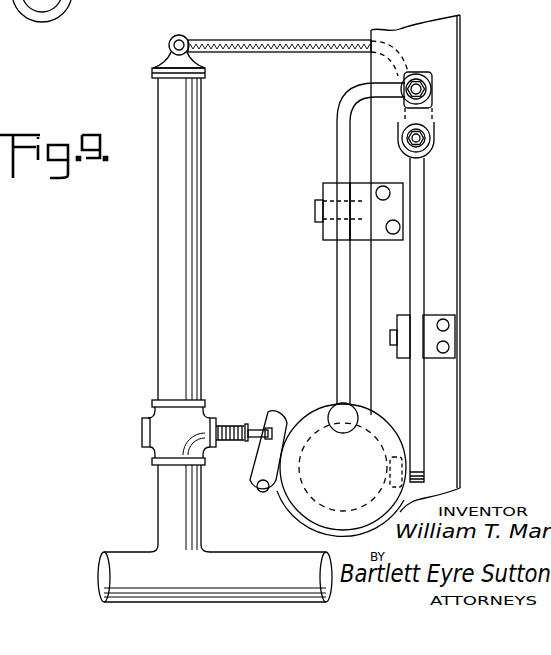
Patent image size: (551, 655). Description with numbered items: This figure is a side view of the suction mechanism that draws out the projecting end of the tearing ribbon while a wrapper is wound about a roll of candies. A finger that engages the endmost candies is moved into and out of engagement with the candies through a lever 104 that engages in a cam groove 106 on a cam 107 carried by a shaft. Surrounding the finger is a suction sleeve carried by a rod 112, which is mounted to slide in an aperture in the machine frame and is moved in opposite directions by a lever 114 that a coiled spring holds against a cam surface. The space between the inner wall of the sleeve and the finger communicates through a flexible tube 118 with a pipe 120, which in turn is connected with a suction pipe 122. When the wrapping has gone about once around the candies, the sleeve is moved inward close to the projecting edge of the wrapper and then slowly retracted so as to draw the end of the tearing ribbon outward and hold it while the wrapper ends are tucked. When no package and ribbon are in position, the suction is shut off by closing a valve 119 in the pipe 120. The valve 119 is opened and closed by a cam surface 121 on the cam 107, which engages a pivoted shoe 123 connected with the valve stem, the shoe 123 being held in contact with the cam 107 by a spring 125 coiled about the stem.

The lever 104 is at (419, 236).
The cam groove 106 is at (372, 433).
The cam 107 is at (376, 452).
The rod 112 is at (427, 90).
The lever 114 is at (338, 277).
The flexible tube 118 is at (271, 40).
The valve 119 is at (203, 412).
The pipe 120 is at (196, 287).
The cam surface 121 is at (320, 527).
The suction pipe 122 is at (226, 560).
The pivoted shoe 123 is at (281, 416).
The spring 125 is at (226, 446).